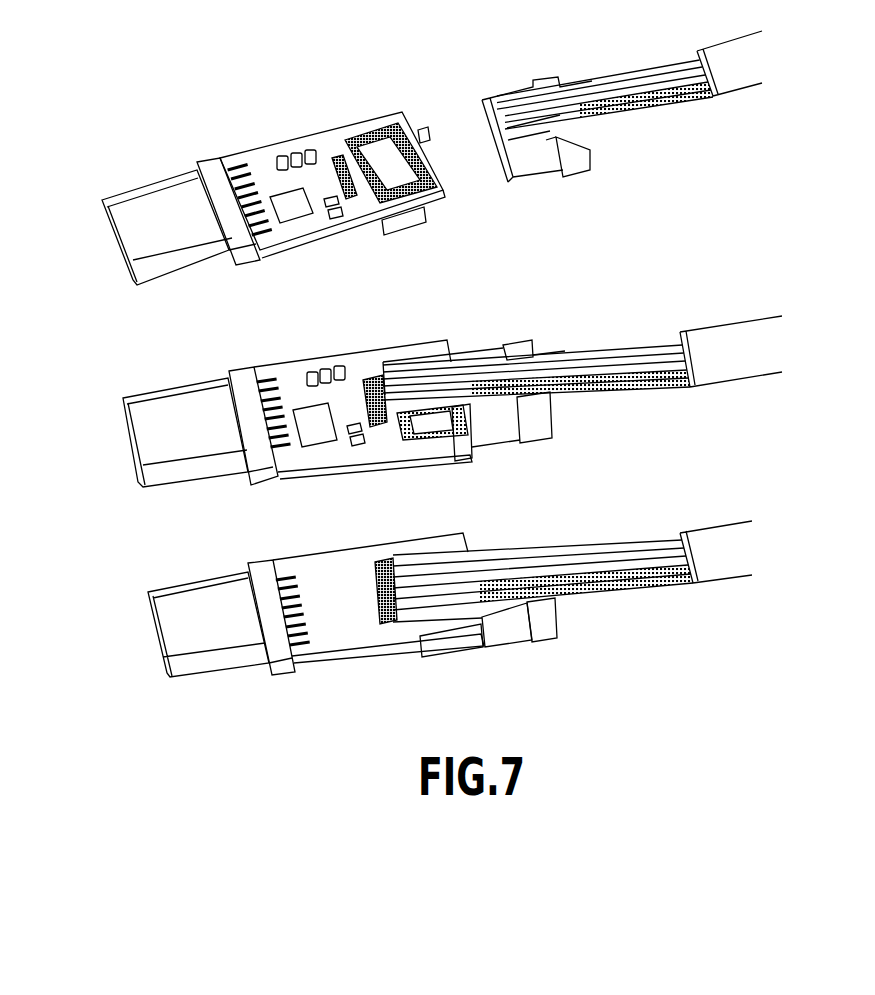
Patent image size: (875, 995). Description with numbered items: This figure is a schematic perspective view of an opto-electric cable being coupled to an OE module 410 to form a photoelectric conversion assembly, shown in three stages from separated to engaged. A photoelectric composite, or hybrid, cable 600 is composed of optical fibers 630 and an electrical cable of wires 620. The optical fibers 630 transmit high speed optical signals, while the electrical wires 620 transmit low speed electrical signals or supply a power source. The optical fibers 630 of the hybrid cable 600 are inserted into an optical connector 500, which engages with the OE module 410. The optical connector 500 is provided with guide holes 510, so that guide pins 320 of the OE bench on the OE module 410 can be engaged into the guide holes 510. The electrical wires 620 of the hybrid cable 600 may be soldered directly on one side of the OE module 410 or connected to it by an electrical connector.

The guide pins 320 is at (450, 183).
The OE module 410 is at (312, 252).
The optical connector 500 is at (484, 99).
The guide holes 510 is at (500, 170).
The photoelectric composite cable 600 is at (747, 97).
The electrical cable (wires) 620 is at (593, 78).
The optical fibers 630 is at (635, 122).